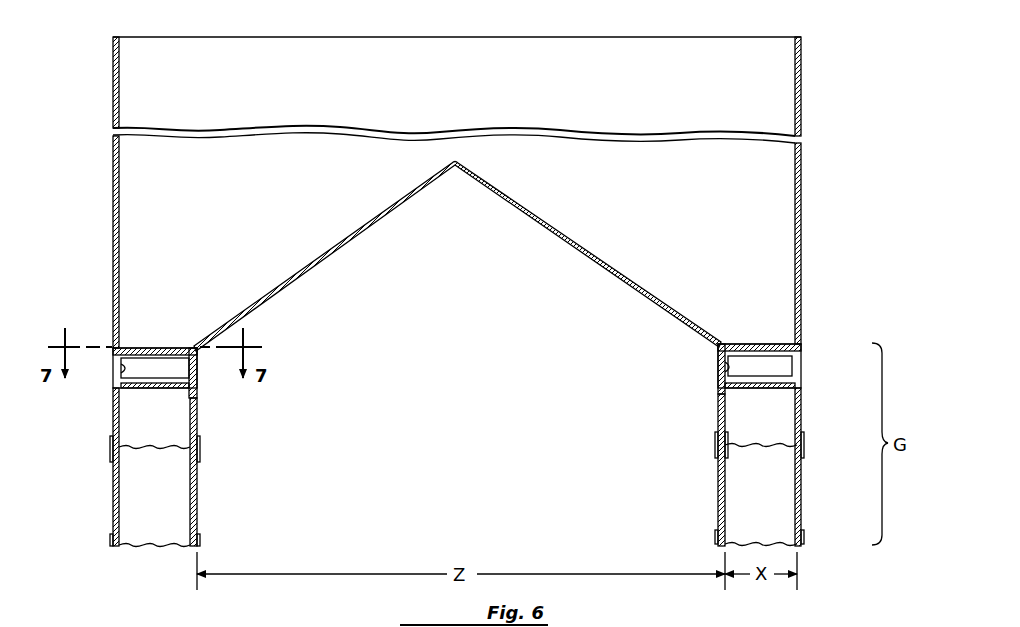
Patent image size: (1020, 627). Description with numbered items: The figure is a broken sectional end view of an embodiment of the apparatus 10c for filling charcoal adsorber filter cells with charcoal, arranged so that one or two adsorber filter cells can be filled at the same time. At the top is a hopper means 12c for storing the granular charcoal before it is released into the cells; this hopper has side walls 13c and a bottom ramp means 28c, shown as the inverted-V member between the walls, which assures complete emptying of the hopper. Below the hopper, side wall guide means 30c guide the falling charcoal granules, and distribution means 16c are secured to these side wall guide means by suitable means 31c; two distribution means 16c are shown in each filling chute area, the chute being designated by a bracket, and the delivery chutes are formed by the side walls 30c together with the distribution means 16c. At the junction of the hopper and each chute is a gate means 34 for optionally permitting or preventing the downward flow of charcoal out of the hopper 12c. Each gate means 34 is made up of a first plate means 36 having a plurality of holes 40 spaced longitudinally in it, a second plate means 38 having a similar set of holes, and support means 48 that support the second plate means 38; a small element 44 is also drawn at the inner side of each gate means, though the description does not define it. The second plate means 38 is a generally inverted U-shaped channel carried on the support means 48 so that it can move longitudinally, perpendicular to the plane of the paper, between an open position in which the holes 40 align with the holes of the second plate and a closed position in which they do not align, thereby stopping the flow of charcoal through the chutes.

The apparatus 10c is at (810, 66).
The hopper means 12c is at (758, 120).
The side walls 13c is at (113, 178).
The bottom ramp means 28c is at (354, 240).
The first plate means 36 is at (131, 348).
The holes 40 is at (155, 348).
The second plate means 38 is at (167, 358).
The retaining nub 44 is at (124, 373).
The support means 48 is at (197, 397).
The gate means 34 is at (207, 367).
The side wall guide means 30c is at (113, 495).
The securing means 31c is at (111, 448).
The distribution means 16c is at (163, 545).